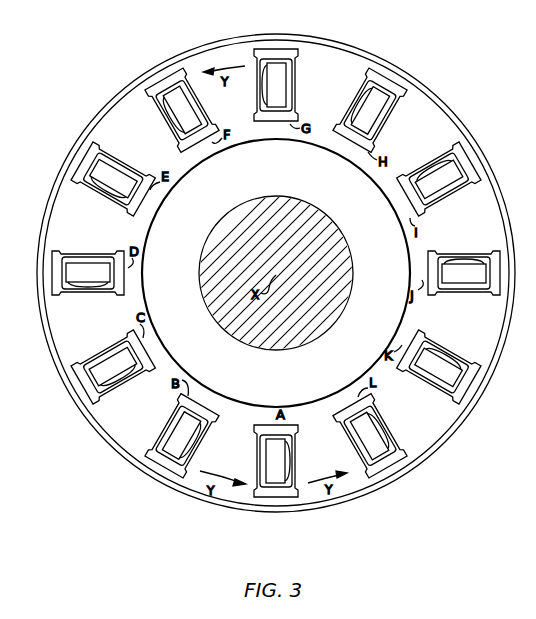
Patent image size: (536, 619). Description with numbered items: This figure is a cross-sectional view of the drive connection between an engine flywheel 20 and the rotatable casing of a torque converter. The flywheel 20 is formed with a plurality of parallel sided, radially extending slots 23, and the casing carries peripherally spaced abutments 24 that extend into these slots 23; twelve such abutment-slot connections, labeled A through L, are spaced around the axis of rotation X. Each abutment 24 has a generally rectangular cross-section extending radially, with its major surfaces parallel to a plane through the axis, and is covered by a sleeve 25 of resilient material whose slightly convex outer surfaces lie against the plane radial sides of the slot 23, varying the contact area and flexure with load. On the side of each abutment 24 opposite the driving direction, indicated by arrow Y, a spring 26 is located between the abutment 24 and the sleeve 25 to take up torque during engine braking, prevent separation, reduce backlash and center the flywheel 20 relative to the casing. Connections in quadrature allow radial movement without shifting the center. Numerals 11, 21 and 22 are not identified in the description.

The hatched central shaft 11 is at (205, 246).
The flywheel 20 is at (255, 176).
The inner rim ring 21 is at (411, 74).
The outer rim 22 is at (467, 133).
The slot 23 is at (267, 454).
The abutment 24 is at (275, 461).
The sleeve 25 is at (263, 461).
The spring 26 is at (303, 461).